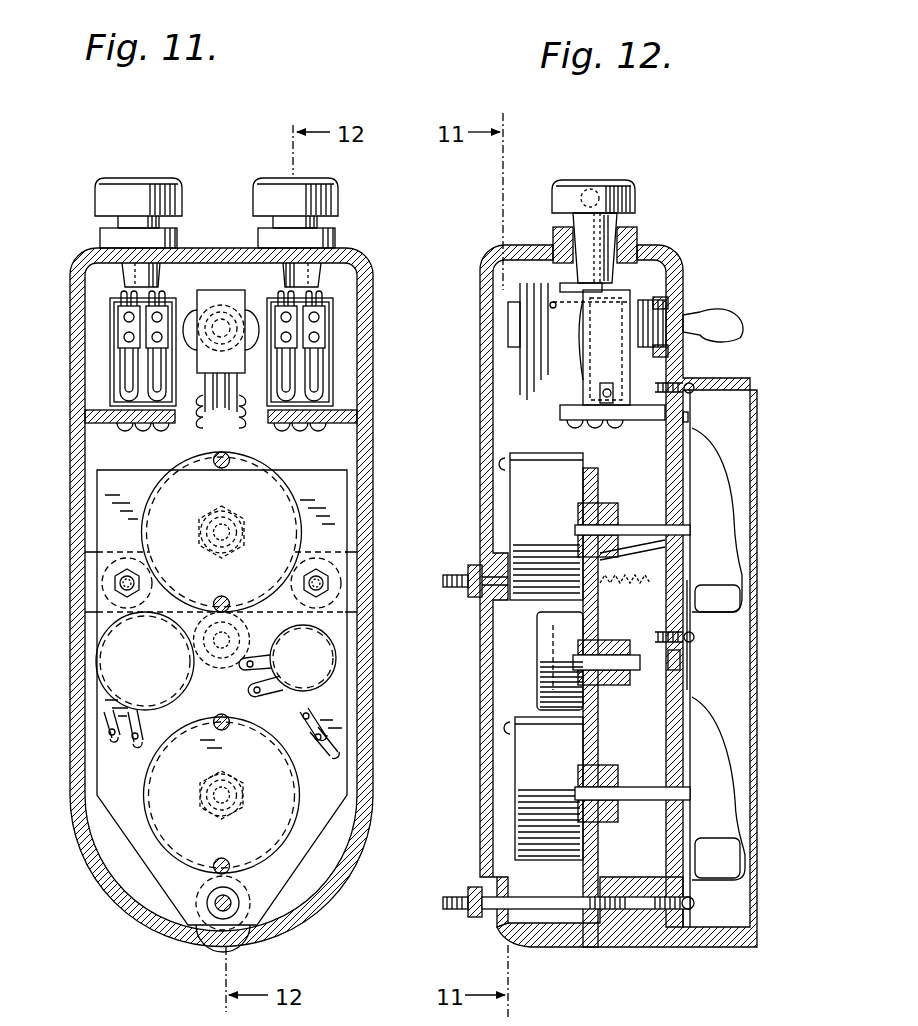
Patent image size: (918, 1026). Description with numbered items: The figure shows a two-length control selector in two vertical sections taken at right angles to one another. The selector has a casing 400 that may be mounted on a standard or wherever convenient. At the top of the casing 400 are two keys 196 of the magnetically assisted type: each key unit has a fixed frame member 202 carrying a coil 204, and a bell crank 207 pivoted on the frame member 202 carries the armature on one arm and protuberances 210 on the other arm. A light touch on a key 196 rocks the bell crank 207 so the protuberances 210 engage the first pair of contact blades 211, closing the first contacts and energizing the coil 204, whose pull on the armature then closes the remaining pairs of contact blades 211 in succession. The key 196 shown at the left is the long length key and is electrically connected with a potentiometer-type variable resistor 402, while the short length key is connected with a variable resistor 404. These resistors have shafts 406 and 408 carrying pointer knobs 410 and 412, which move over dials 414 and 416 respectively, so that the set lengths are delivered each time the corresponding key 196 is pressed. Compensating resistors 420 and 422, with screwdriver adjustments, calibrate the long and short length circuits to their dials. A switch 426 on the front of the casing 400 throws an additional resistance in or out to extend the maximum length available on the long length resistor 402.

In FIG. 11, the key top or push button 196 is at (95, 196).
In FIG. 12, the key top or push button 196 is at (633, 186).
In FIG. 12, the fixed frame member 202 is at (620, 292).
In FIG. 12, the coil 204 is at (582, 327).
In FIG. 11, the bell crank 207 is at (112, 330).
In FIG. 12, the bell crank 207 is at (553, 318).
In FIG. 12, the protuberances 210 is at (545, 404).
In FIG. 11, the contact blades 211 is at (165, 384).
In FIG. 12, the contact blades 211 is at (535, 372).
In FIG. 11, the casing 400 is at (372, 418).
In FIG. 12, the casing 400 is at (482, 823).
In FIG. 11, the variable resistor 402 is at (290, 508).
In FIG. 12, the variable resistor 402 is at (528, 497).
In FIG. 11, the variable resistor 404 is at (293, 797).
In FIG. 12, the variable resistor 404 is at (530, 748).
In FIG. 11, the shaft 406 is at (233, 522).
In FIG. 12, the shaft 406 is at (633, 522).
In FIG. 11, the shaft 408 is at (223, 775).
In FIG. 12, the shaft 408 is at (637, 786).
In FIG. 12, the pointer knob 410 is at (715, 500).
In FIG. 12, the pointer knob 412 is at (720, 797).
In FIG. 12, the dial 414 is at (689, 418).
In FIG. 12, the dial 416 is at (688, 690).
In FIG. 11, the compensating resistor 420 is at (112, 673).
In FIG. 12, the compensating resistor 420 is at (545, 632).
In FIG. 11, the compensating resistor 422 is at (325, 656).
In FIG. 12, the compensating resistor 422 is at (538, 673).
In FIG. 11, the switch 426 is at (210, 298).
In FIG. 12, the switch 426 is at (736, 318).